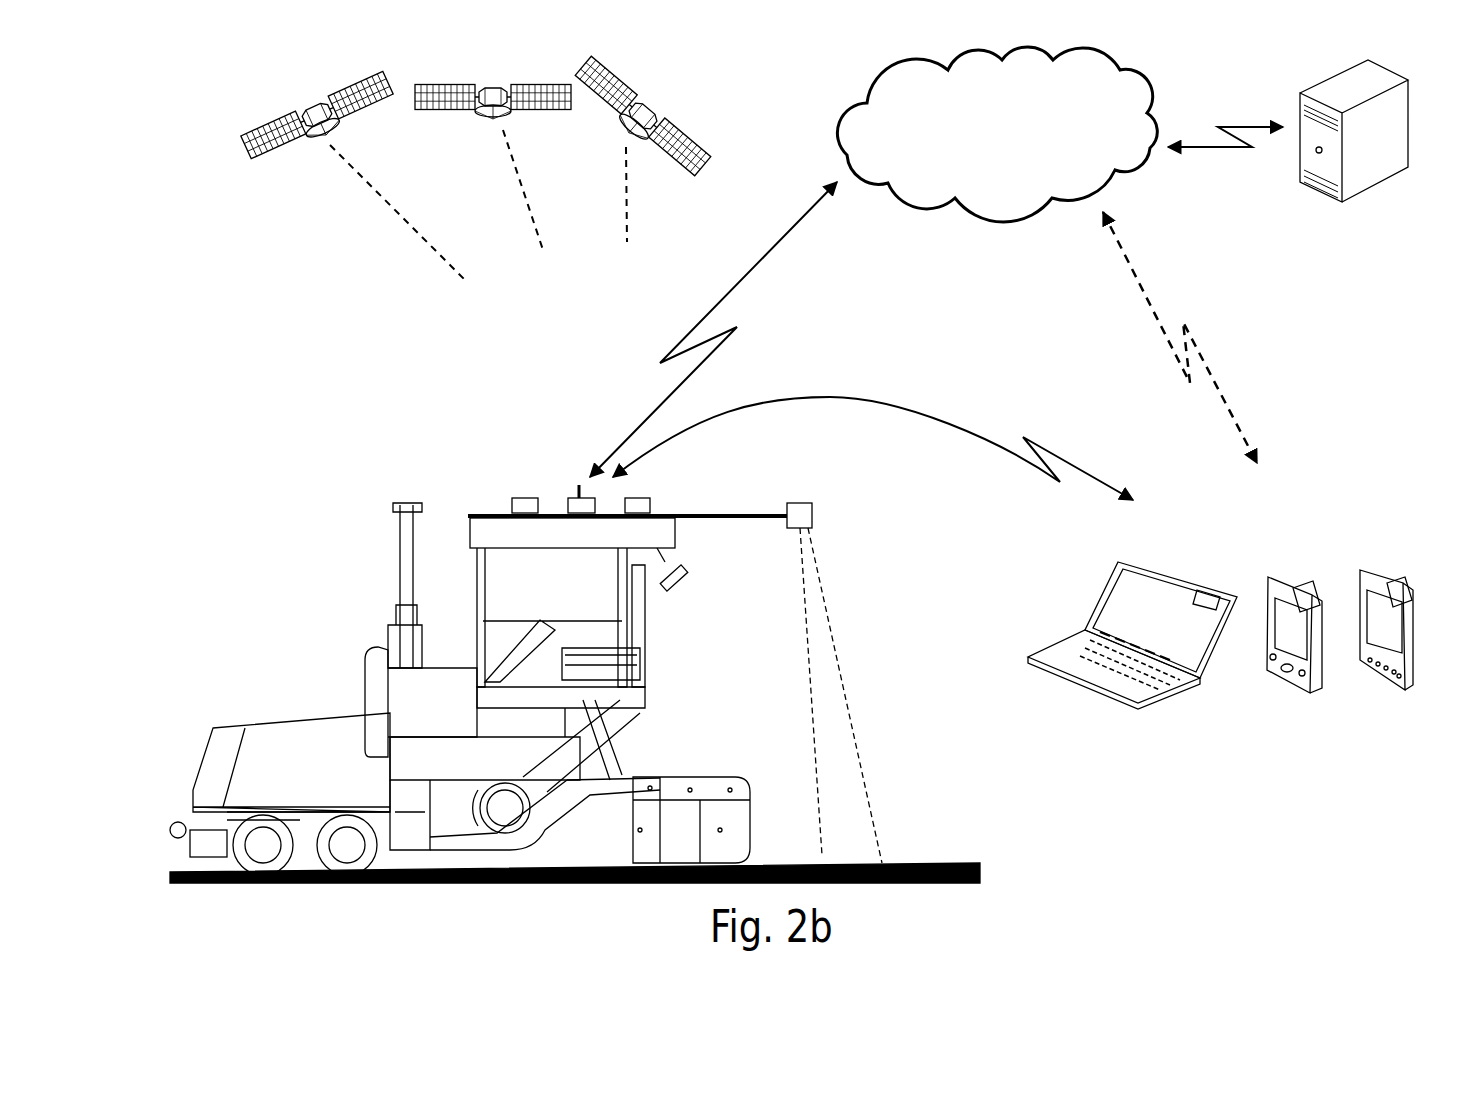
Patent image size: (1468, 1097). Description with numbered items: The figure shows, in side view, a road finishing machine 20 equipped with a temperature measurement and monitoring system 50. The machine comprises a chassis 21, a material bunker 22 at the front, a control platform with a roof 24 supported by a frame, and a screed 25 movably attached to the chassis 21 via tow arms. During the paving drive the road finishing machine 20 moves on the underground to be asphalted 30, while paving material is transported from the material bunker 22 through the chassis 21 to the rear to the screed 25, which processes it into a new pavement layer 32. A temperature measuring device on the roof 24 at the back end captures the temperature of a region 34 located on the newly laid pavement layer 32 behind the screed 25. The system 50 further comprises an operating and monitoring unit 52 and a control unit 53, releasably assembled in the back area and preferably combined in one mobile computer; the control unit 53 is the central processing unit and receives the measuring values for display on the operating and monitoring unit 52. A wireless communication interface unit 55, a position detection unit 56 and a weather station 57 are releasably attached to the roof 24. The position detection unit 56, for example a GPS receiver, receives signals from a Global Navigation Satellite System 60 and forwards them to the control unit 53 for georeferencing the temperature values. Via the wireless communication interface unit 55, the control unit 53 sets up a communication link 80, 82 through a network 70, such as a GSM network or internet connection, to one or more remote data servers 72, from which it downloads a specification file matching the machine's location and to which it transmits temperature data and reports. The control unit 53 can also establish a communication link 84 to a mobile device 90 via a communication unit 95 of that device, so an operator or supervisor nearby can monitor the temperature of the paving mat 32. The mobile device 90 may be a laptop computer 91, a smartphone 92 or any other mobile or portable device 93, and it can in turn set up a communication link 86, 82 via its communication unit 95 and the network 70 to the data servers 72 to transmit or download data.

The road finishing machine 20 is at (526, 646).
The chassis 21 is at (471, 774).
The material bunker 22 is at (328, 781).
The roof 24 is at (498, 530).
The screed 25 is at (713, 820).
The underground to be asphalted 30 is at (162, 865).
The new pavement layer 32 is at (948, 863).
The region 34 is at (852, 853).
The temperature measurement and monitoring system 50 is at (783, 490).
The operating and monitoring unit 52 is at (703, 605).
The control unit 53 is at (677, 577).
The wireless communication interface unit 55 is at (579, 485).
The position detection unit 56 is at (650, 505).
The weather station 57 is at (525, 498).
The Global Navigation Satellite System 60 is at (243, 165).
The network 70 is at (1013, 146).
The data servers 72 is at (1388, 157).
The communication link 80 is at (765, 255).
The communication link 82 is at (1245, 125).
The communication link 84 is at (910, 403).
The communication link 86 is at (1150, 310).
The mobile device 90 is at (1239, 598).
The laptop computer 91 is at (1140, 683).
The smartphone 92 is at (1297, 685).
The mobile or portable device 93 is at (1393, 680).
The communication unit 95 is at (1212, 597).